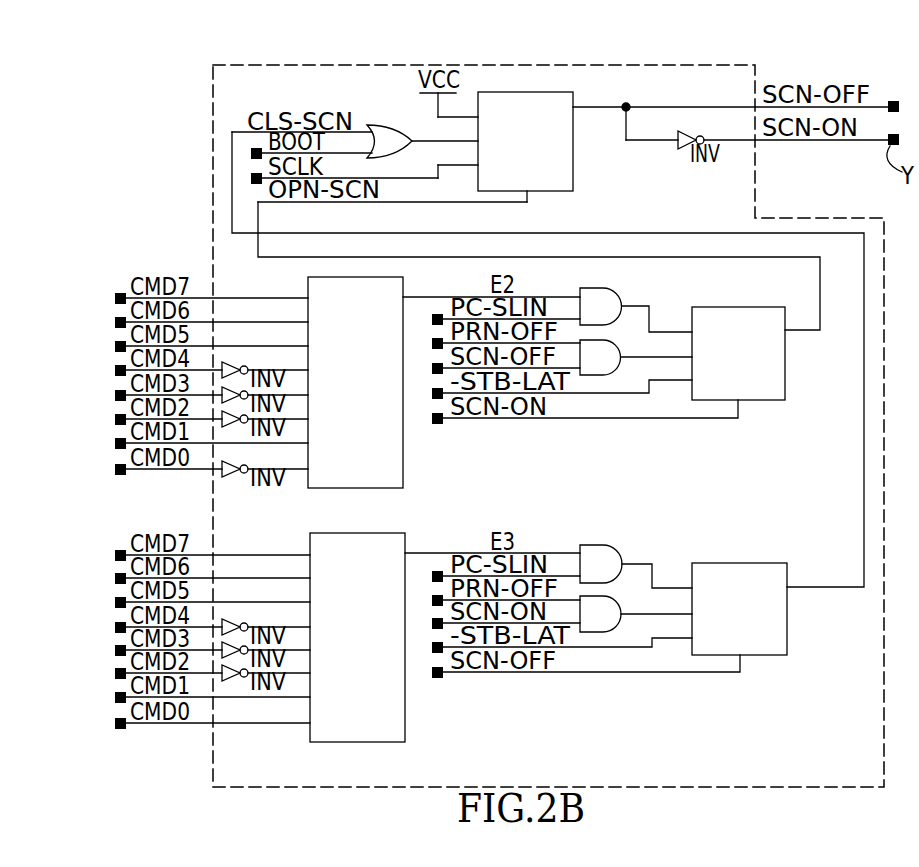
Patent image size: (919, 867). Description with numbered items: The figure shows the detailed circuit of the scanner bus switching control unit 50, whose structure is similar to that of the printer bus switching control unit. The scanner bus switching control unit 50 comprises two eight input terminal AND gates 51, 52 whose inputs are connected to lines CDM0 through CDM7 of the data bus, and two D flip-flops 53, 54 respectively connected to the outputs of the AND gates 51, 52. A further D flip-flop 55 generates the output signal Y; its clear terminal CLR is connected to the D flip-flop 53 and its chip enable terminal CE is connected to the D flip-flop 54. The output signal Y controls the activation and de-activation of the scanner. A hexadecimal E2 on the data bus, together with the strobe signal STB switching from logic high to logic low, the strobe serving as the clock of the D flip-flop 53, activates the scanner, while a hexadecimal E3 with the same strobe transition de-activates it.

The scanner bus switching control unit 50 is at (757, 67).
The eight input terminal AND gate 51 is at (393, 465).
The eight input terminal AND gate 52 is at (393, 722).
The D flip-flop 53 is at (777, 381).
The D flip-flop 54 is at (782, 636).
The D flip-flop 55 is at (570, 176).